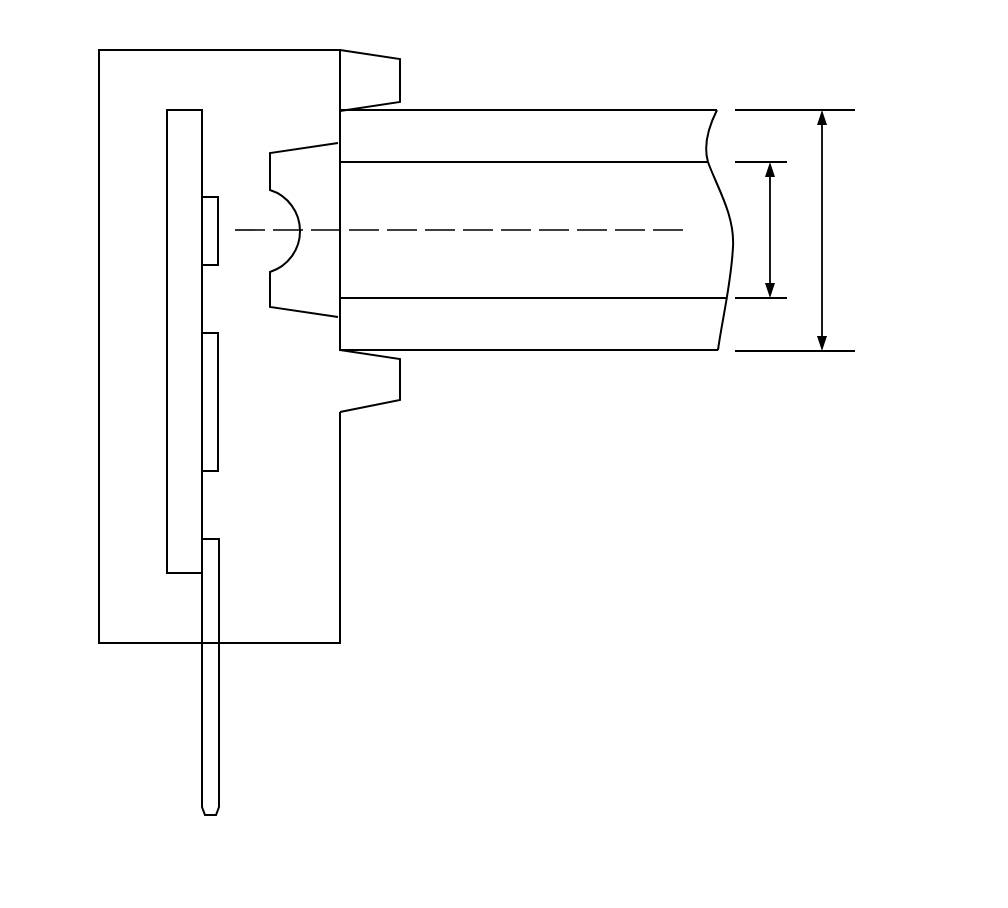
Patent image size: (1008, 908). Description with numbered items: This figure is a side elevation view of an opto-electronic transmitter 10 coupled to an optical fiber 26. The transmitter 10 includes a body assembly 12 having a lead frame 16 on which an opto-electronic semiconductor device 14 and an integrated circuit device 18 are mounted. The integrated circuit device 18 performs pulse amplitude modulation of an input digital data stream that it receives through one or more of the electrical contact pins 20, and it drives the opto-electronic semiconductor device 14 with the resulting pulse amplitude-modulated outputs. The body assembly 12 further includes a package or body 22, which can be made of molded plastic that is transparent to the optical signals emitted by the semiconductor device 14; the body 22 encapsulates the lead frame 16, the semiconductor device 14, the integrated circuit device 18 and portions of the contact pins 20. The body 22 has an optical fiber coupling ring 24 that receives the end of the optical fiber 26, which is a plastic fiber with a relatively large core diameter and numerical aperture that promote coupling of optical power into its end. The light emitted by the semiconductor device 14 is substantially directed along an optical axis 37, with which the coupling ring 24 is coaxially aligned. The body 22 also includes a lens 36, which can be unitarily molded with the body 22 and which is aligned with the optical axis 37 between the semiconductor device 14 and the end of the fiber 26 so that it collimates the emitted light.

The opto-electronic transmitter 10 is at (595, 628).
The body assembly 12 is at (75, 297).
The opto-electronic semiconductor device 14 is at (218, 199).
The lead frame 16 is at (167, 490).
The integrated circuit device 18 is at (218, 453).
The electrical contact pins 20 is at (202, 711).
The body 22 is at (340, 572).
The optical fiber coupling ring 24 is at (400, 73).
The optical fiber 26 is at (618, 110).
The lens 36 is at (289, 203).
The optical axis 37 is at (458, 230).